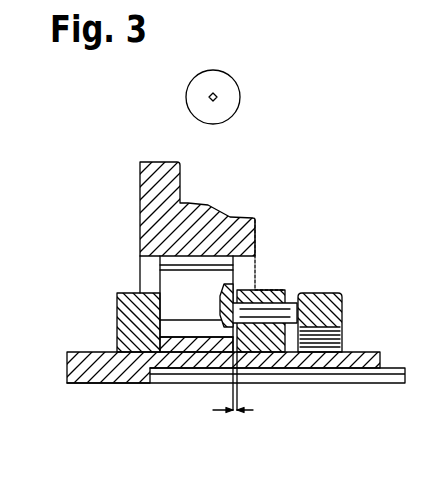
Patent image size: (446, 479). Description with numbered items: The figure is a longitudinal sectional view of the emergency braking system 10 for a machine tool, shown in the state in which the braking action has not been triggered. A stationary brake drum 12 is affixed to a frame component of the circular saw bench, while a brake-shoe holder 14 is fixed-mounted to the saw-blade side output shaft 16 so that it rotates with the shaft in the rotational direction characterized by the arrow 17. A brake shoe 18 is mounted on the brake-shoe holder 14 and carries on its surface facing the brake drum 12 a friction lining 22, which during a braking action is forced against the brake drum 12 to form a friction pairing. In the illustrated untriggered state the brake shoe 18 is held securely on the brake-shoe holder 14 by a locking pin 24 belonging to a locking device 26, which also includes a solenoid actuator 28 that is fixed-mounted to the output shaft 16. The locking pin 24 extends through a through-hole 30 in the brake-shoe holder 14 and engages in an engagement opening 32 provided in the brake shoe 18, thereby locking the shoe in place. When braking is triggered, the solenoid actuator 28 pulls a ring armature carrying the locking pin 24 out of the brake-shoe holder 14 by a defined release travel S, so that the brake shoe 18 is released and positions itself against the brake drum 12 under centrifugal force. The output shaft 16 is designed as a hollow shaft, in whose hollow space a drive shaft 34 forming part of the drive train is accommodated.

The emergency braking system 10 is at (311, 148).
The brake drum 12 is at (147, 183).
The brake-shoe holder 14 is at (115, 313).
The output shaft 16 is at (103, 365).
The arrow 17 is at (212, 78).
The brake shoe 18 is at (175, 287).
The friction lining 22 is at (182, 268).
The locking pin 24 is at (262, 335).
The locking device 26 is at (312, 273).
The solenoid actuator 28 is at (343, 310).
The through-hole 30 is at (276, 328).
The engagement opening 32 is at (197, 328).
The drive shaft 34 is at (367, 380).
The release travel S is at (233, 414).